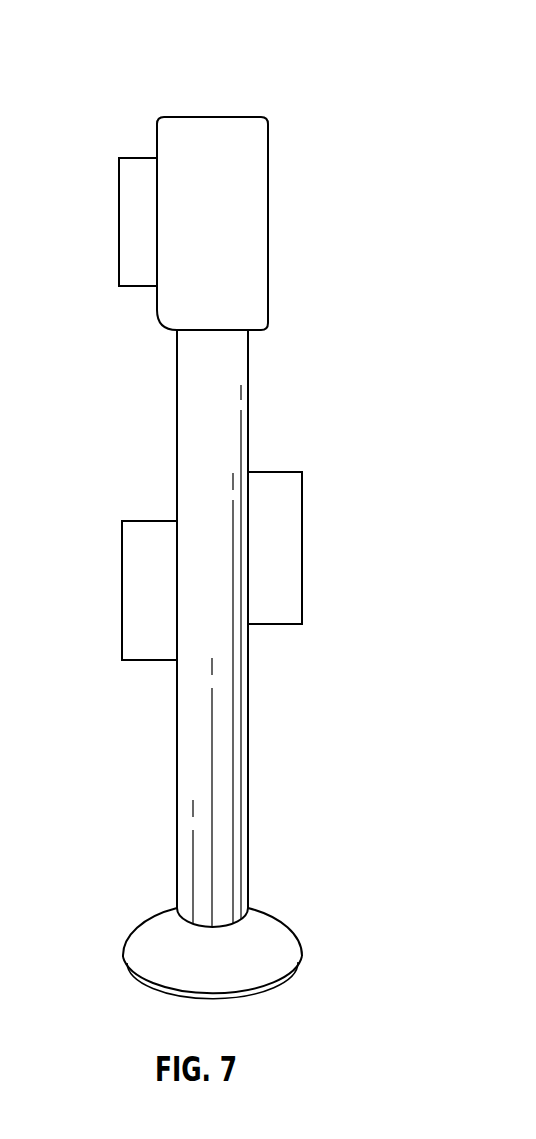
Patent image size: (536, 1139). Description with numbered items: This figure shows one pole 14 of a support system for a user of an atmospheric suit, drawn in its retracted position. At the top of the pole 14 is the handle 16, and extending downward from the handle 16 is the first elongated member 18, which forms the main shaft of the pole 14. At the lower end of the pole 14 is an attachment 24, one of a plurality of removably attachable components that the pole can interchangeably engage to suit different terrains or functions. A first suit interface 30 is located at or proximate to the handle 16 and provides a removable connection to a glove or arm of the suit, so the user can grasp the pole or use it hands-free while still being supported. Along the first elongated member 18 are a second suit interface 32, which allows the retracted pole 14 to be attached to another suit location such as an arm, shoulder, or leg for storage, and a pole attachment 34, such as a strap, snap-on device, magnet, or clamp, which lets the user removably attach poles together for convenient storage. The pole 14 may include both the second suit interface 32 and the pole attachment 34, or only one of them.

The pole 14 is at (382, 58).
The handle 16 is at (250, 192).
The first elongated member 18 is at (189, 812).
The attachment 24 is at (275, 938).
The first suit interface 30 is at (128, 203).
The second suit interface 32 is at (285, 547).
The pole attachment 34 is at (132, 567).